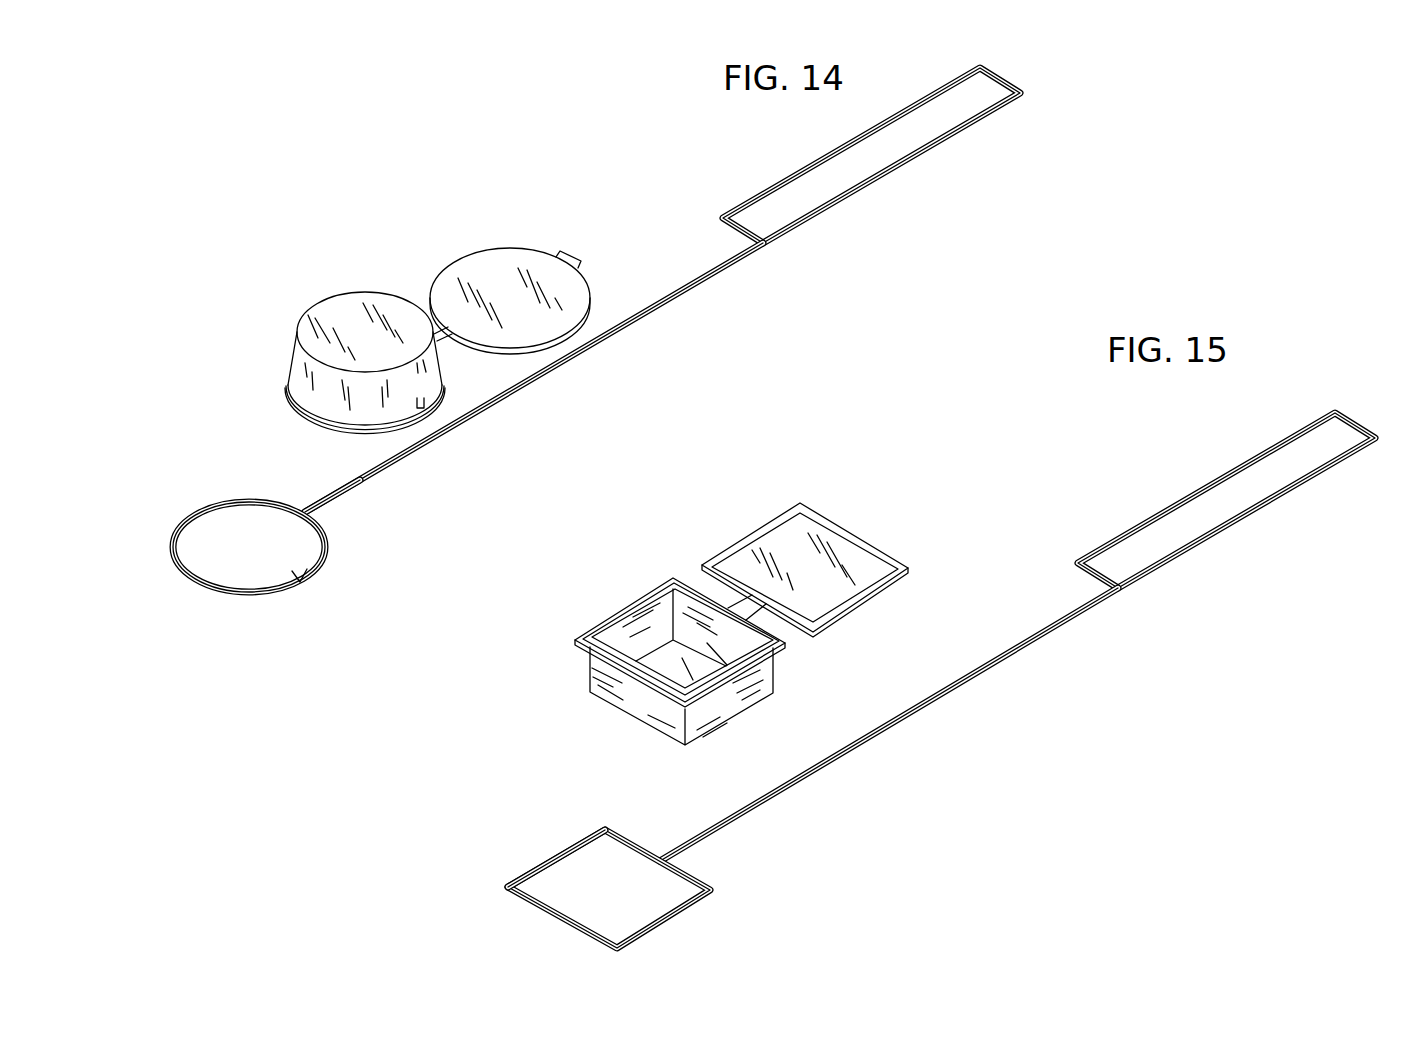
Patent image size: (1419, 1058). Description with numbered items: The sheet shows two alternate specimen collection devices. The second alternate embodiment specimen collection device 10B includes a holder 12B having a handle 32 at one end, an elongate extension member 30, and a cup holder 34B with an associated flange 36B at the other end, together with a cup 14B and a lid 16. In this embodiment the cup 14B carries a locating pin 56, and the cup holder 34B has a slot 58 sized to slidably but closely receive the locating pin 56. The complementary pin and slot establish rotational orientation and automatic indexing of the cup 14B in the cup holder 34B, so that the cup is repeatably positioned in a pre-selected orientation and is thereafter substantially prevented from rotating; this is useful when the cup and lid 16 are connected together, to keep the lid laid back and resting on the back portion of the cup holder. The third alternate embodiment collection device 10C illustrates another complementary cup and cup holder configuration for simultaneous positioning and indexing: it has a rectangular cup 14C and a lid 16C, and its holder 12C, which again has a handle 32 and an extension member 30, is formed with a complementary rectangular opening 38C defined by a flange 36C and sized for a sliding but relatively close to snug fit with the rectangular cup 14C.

In FIG. 14, the second alternate embodiment specimen collection device 10B is at (475, 192).
In FIG. 14, the holder 12B is at (711, 297).
In FIG. 14, the cup 14B is at (293, 362).
In FIG. 14, the lid 16 is at (537, 262).
In FIG. 14, the extension member 30 is at (553, 375).
In FIG. 15, the extension member 30 is at (912, 718).
In FIG. 14, the handle 32 is at (912, 163).
In FIG. 15, the handle 32 is at (1263, 505).
In FIG. 14, the cup holder 34B is at (352, 490).
In FIG. 14, the flange 36B is at (327, 562).
In FIG. 14, the locating pin 56 is at (420, 408).
In FIG. 14, the slot 58 is at (298, 575).
In FIG. 15, the third alternate embodiment collection device 10C is at (960, 432).
In FIG. 15, the holder 12C is at (1068, 642).
In FIG. 15, the rectangular cup 14C is at (588, 670).
In FIG. 15, the lid 16C is at (880, 550).
In FIG. 15, the flange 36C is at (690, 907).
In FIG. 15, the rectangular opening 38C is at (562, 852).